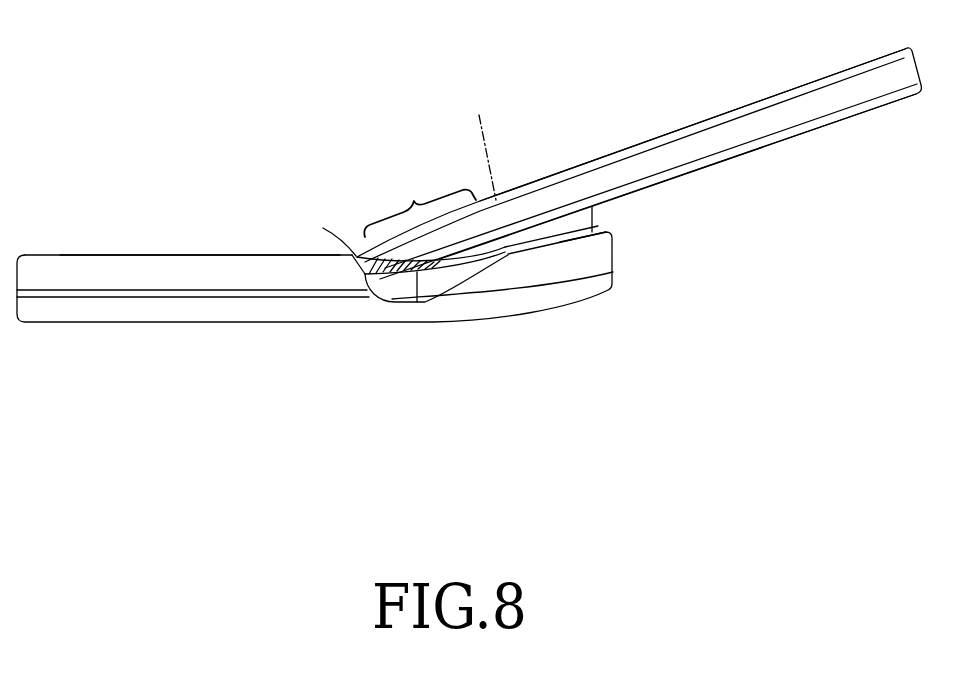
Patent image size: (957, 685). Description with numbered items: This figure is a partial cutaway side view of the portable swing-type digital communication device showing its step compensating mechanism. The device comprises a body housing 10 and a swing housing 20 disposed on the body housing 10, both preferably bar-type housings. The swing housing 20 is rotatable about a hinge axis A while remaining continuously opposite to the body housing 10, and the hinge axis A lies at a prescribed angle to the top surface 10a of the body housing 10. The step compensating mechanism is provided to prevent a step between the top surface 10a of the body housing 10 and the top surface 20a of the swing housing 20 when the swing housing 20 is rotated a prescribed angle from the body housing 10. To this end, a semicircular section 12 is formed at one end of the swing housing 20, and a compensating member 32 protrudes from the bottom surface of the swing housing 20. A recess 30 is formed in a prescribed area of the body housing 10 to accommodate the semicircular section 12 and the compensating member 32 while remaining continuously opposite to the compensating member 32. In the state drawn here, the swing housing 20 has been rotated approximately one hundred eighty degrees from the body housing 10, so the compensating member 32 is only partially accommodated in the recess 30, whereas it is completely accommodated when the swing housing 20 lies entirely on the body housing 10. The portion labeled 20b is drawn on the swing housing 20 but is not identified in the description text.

The body housing 10 is at (132, 245).
The top surface of the body housing 10a is at (217, 255).
The semicircular section 12 is at (420, 202).
The swing housing 20 is at (710, 102).
The top surface of the swing housing 20a is at (567, 169).
The second portion of second body 20b is at (750, 153).
The recess 30 is at (385, 274).
The compensating member 32 is at (590, 223).
The hinge axis A is at (483, 133).